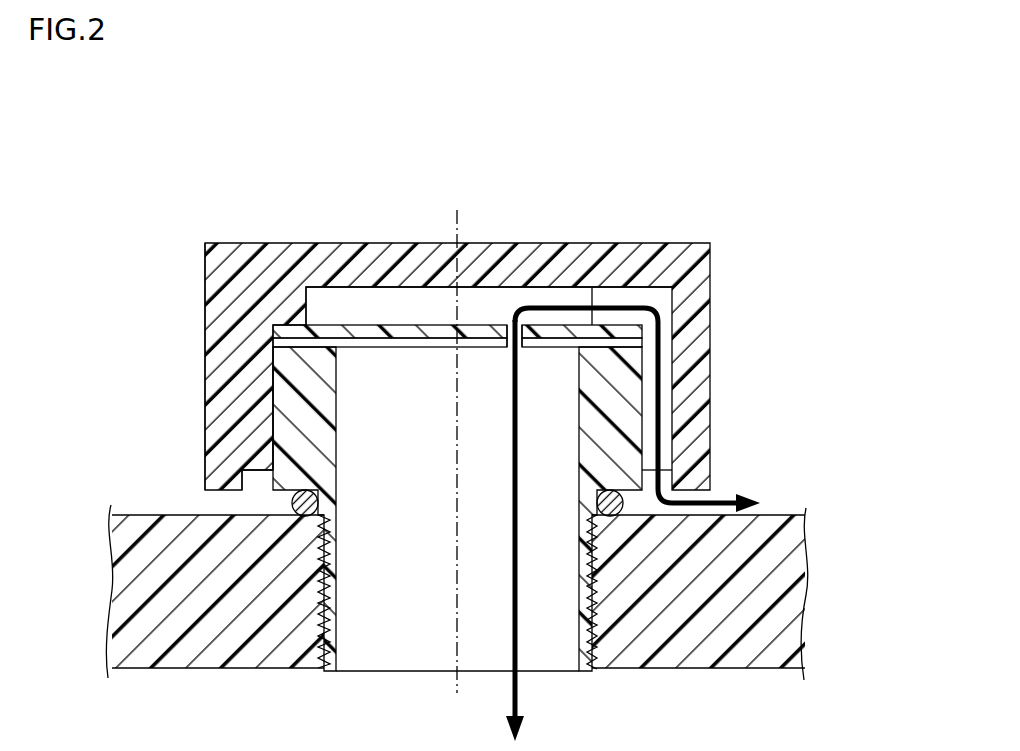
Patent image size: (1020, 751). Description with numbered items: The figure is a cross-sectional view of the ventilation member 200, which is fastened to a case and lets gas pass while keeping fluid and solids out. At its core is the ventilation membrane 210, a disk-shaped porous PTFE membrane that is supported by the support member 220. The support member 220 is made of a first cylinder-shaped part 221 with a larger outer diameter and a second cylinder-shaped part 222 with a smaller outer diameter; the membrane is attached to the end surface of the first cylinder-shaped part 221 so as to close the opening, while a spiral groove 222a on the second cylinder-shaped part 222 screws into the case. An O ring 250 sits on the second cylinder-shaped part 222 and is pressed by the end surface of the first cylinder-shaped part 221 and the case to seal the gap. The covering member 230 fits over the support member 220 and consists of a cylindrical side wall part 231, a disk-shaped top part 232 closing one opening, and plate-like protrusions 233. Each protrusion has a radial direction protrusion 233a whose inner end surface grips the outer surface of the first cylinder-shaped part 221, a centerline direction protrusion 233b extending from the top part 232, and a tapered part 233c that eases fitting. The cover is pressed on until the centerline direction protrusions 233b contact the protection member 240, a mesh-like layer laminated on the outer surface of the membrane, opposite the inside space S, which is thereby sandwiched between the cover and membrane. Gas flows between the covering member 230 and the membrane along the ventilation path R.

The ventilation member 200 is at (722, 205).
The ventilation membrane 210 is at (643, 343).
The support member 220 is at (822, 350).
The first cylinder-shaped part 221 is at (643, 365).
The second cylinder-shaped part 222 is at (610, 558).
The groove 222a is at (590, 655).
The covering member 230 is at (102, 201).
The side wall part 231 is at (210, 343).
The top part 232 is at (260, 243).
The protrusions 233 is at (262, 365).
The radial direction protrusion 233a is at (262, 412).
The centerline direction protrusion 233b is at (307, 300).
The tapered part 233c is at (262, 462).
The protection member 240 is at (492, 324).
The O ring 250 is at (292, 503).
The ventilation path R is at (652, 410).
The inside space S is at (470, 743).